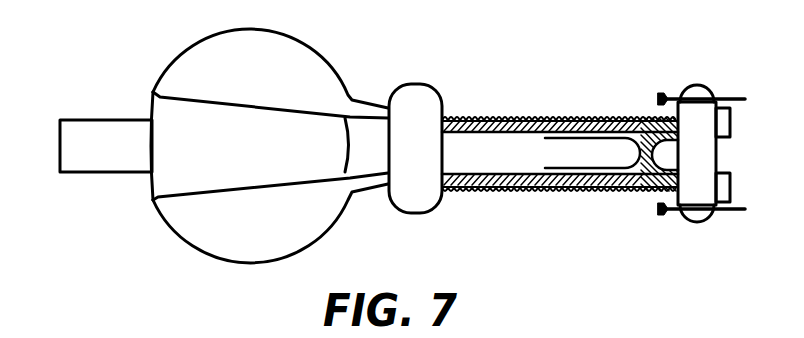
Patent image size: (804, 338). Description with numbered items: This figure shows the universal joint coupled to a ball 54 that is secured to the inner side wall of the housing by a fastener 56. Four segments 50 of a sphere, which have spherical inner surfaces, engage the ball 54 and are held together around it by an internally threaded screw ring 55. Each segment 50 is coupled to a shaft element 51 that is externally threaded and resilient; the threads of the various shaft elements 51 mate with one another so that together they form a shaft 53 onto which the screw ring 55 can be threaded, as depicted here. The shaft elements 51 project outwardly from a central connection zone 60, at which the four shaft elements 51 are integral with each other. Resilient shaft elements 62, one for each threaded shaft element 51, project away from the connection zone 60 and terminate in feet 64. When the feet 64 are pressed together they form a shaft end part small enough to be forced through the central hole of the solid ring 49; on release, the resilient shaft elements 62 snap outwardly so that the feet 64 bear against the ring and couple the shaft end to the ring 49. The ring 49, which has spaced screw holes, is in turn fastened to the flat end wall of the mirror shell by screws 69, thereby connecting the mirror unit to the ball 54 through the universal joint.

The solid ring 49 is at (697, 217).
The segments 50 is at (243, 70).
The shaft elements 51 is at (560, 118).
The shaft 53 is at (496, 118).
The ball 54 is at (217, 115).
The screw ring 55 is at (405, 108).
The fastener 56 is at (110, 147).
The central connection zone 60 is at (640, 152).
The resilient shaft elements 62 is at (650, 118).
The feet 64 is at (732, 124).
The screws 69 is at (722, 98).